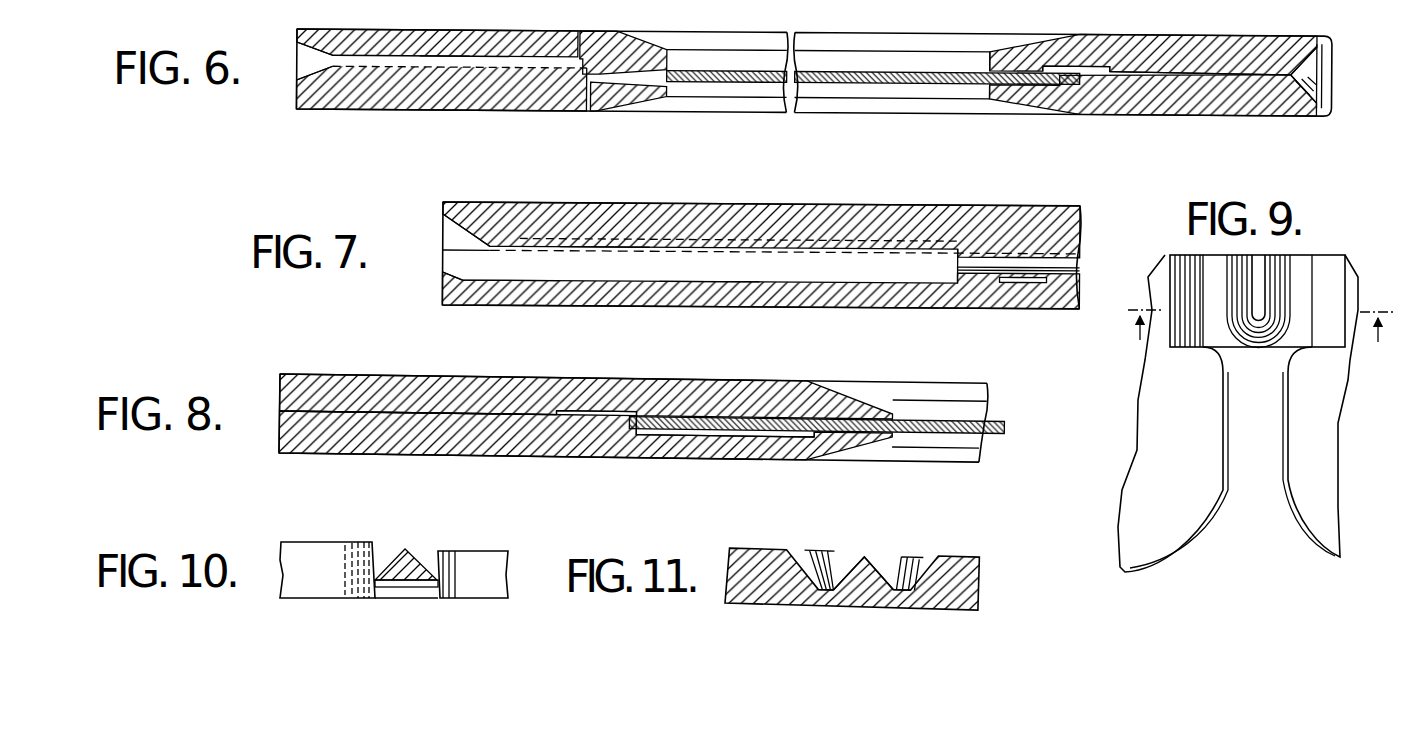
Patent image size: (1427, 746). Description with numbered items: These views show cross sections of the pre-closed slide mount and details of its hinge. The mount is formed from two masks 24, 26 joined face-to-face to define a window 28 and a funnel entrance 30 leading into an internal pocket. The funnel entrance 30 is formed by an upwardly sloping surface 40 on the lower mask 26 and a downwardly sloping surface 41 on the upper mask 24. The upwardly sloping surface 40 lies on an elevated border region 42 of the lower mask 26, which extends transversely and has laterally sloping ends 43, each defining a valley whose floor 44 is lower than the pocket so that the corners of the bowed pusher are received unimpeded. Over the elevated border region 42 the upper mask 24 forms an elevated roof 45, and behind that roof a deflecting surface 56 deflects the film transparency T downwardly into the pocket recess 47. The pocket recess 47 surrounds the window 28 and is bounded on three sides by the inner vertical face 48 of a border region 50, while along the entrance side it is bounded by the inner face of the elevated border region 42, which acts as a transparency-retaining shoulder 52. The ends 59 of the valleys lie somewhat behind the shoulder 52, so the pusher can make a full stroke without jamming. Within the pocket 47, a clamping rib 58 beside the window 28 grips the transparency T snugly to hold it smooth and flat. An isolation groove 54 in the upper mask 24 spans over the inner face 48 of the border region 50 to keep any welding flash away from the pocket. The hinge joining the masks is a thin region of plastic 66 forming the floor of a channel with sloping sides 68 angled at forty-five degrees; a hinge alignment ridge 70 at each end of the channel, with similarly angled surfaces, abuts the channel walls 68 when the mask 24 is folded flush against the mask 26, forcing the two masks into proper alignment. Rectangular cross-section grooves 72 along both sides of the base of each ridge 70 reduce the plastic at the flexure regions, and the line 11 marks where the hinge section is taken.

In FIG. 6, the upper mask 24 is at (345, 30).
In FIG. 7, the upper mask 24 is at (752, 207).
In FIG. 8, the upper mask 24 is at (345, 380).
In FIG. 10, the upper mask 24 is at (470, 556).
In FIG. 6, the lower mask 26 is at (330, 110).
In FIG. 7, the lower mask 26 is at (790, 306).
In FIG. 8, the lower mask 26 is at (290, 452).
In FIG. 10, the lower mask 26 is at (345, 545).
In FIG. 6, the window 28 is at (822, 61).
In FIG. 6, the funnel entrance 30 is at (292, 62).
In FIG. 7, the funnel entrance 30 is at (438, 250).
In FIG. 6, the upwardly sloping surface 40 is at (297, 78).
In FIG. 7, the upwardly sloping surface 40 is at (450, 276).
In FIG. 6, the downwardly sloping surface 41 is at (300, 53).
In FIG. 7, the downwardly sloping surface 41 is at (445, 226).
In FIG. 6, the elevated border region 42 is at (458, 72).
In FIG. 7, the elevated border region 42 is at (598, 246).
In FIG. 7, the laterally sloping end 43 is at (705, 274).
In FIG. 7, the valley floor 44 is at (525, 282).
In FIG. 6, the elevated roof 45 is at (428, 53).
In FIG. 7, the elevated roof 45 is at (640, 207).
In FIG. 6, the pocket recess 47 is at (978, 66).
In FIG. 7, the pocket recess 47 is at (1078, 265).
In FIG. 8, the pocket recess 47 is at (728, 432).
In FIG. 6, the inner vertical face 48 is at (1062, 82).
In FIG. 8, the inner vertical face 48 is at (640, 430).
In FIG. 6, the border region 50 is at (1200, 68).
In FIG. 8, the border region 50 is at (432, 413).
In FIG. 6, the transparency-retaining shoulder 52 is at (592, 80).
In FIG. 7, the transparency-retaining shoulder 52 is at (970, 267).
In FIG. 6, the isolation groove 54 is at (1100, 60).
In FIG. 8, the isolation groove 54 is at (615, 407).
In FIG. 6, the deflecting surface 56 is at (580, 55).
In FIG. 7, the deflecting surface 56 is at (980, 245).
In FIG. 8, the clamping rib 58 is at (893, 430).
In FIG. 7, the valley end 59 is at (1030, 284).
In FIG. 10, the hinge region 66 is at (405, 590).
In FIG. 11, the hinge region 66 is at (858, 598).
In FIG. 6, the sloping channel side 68 is at (1320, 90).
In FIG. 11, the sloping channel side 68 is at (808, 565).
In FIG. 6, the hinge alignment ridge 70 is at (1318, 55).
In FIG. 9, the hinge alignment ridge 70 is at (1258, 345).
In FIG. 10, the hinge alignment ridge 70 is at (410, 552).
In FIG. 11, the hinge alignment ridge 70 is at (863, 556).
In FIG. 9, the rectangular cross-section groove 72 is at (1215, 258).
In FIG. 11, the rectangular cross-section groove 72 is at (820, 596).
In FIG. 6, the film transparency T is at (875, 82).
In FIG. 8, the film transparency T is at (1000, 412).
In FIG. 9, the section line 11- 11 is at (1260, 332).